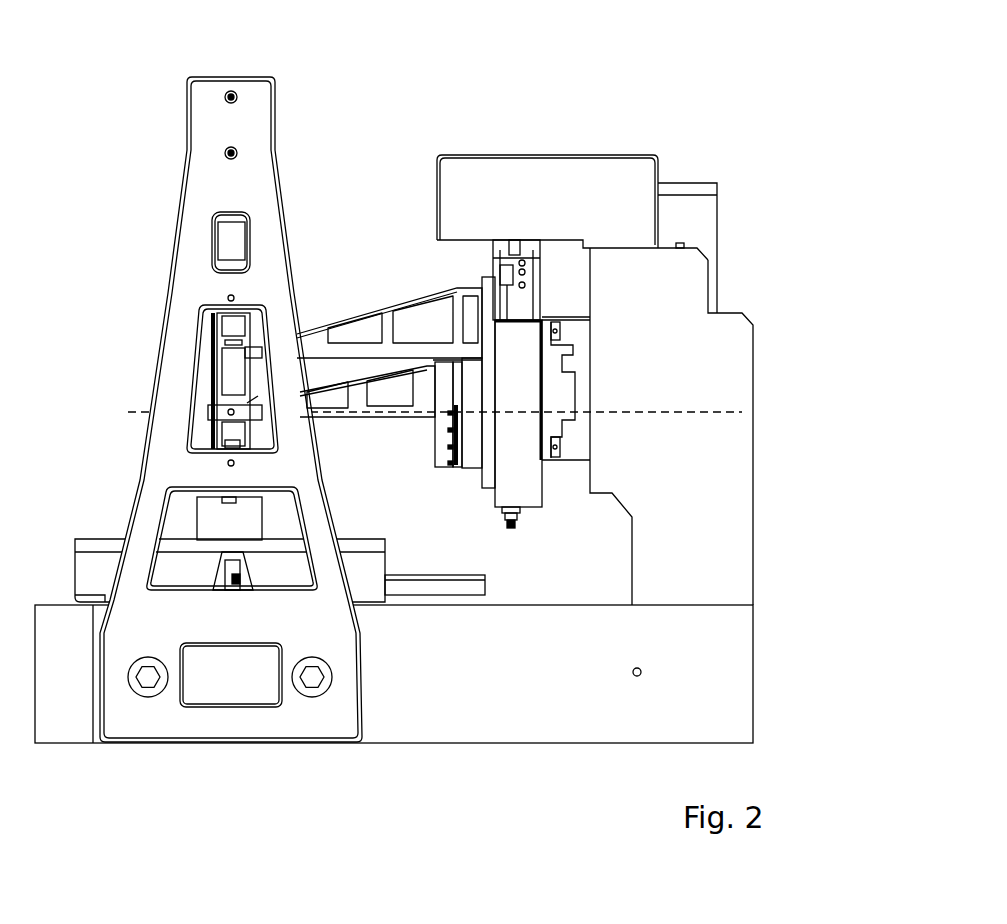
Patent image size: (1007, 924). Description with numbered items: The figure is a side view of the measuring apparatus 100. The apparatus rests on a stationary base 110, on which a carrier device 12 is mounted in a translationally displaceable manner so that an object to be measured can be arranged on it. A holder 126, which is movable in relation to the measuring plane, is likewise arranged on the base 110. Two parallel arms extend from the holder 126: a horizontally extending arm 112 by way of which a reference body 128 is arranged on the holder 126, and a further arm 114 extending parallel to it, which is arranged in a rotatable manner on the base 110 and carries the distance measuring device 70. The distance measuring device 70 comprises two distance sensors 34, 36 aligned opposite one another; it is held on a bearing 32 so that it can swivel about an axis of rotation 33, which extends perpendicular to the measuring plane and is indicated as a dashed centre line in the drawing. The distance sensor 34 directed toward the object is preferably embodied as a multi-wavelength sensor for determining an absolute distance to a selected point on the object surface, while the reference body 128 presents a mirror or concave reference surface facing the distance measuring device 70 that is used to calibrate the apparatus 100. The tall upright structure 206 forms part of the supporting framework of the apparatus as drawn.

The measuring apparatus 100 is at (430, 110).
The base 110 is at (540, 168).
The support column 206 is at (248, 97).
The horizontally extending arm 112 is at (383, 310).
The further arm 114 is at (330, 392).
The reference body 128 is at (232, 330).
The distance sensor 36 is at (233, 380).
The distance measuring device 70 is at (200, 400).
The distance sensor 34 is at (225, 433).
The carrier device 12 is at (213, 533).
The bearing 32 is at (435, 450).
The holder 126 is at (465, 462).
The axis of rotation 33 is at (614, 412).